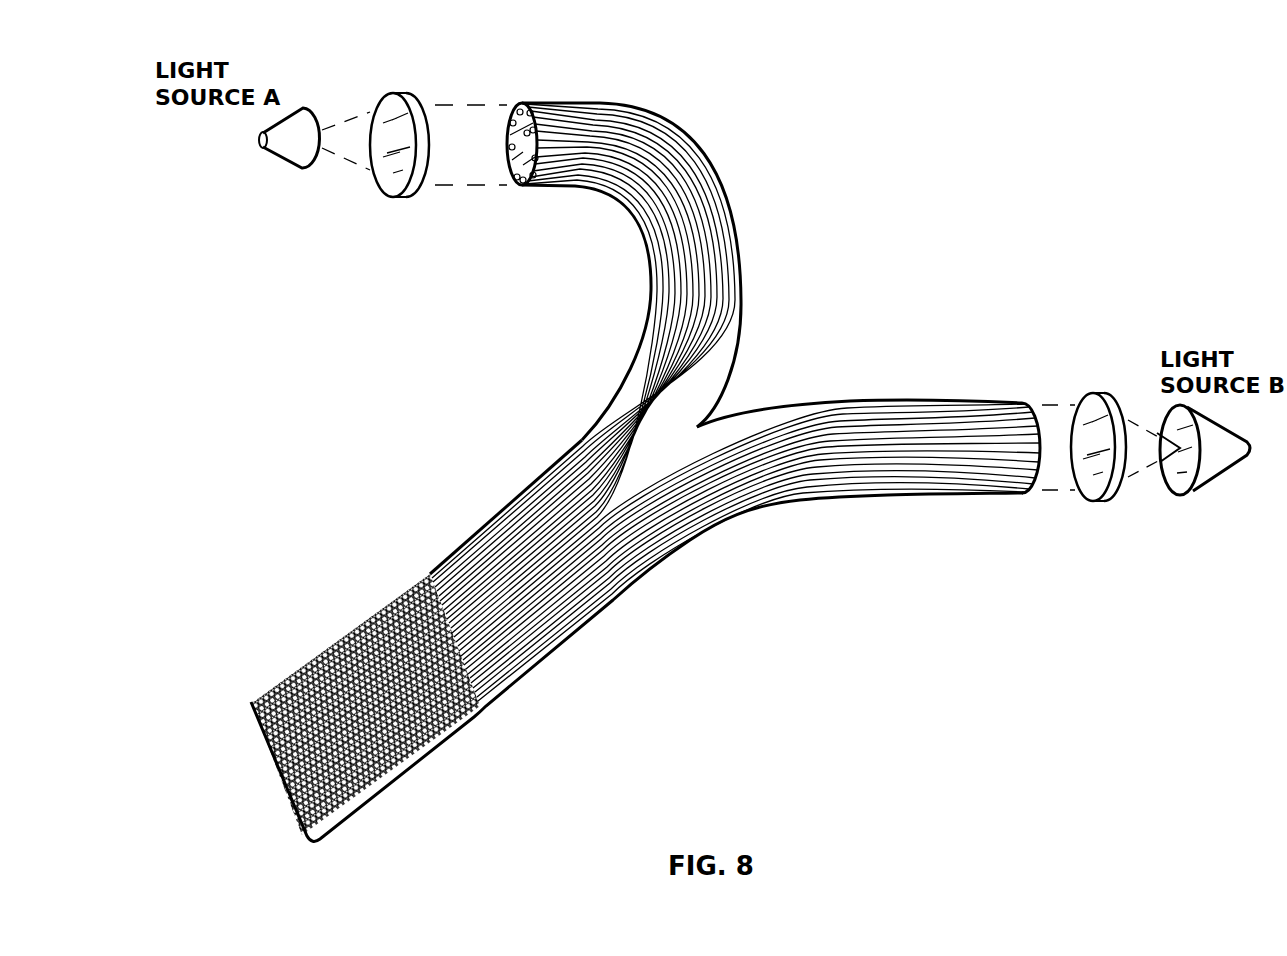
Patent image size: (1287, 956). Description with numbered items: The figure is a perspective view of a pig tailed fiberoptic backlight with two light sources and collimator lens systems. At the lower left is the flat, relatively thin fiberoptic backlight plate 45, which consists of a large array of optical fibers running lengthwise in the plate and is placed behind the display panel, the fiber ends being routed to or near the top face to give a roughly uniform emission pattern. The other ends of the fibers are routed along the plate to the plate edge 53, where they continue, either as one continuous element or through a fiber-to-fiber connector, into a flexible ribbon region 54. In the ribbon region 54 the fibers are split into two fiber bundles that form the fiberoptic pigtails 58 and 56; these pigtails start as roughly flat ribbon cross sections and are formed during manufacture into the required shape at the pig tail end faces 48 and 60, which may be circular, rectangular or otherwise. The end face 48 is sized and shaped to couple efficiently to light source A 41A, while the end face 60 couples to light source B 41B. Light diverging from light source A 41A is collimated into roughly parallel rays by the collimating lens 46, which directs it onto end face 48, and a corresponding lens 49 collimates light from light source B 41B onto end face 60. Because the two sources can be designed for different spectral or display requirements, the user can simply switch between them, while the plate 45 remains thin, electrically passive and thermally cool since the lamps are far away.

The light source A 41A is at (290, 147).
The light source B 41B is at (1222, 458).
The collimating lens 46 is at (392, 93).
The lens 49 is at (1109, 400).
The pig tail end face 48 is at (517, 108).
The fiberoptic bundle pigtail 58 is at (640, 338).
The flexible ribbon region 54 is at (590, 467).
The plate edge 53 is at (448, 603).
The fiberoptic backlight plate 45 is at (318, 648).
The fiberoptic bundle pigtail 56 is at (818, 488).
The pig tail end face 60 is at (1040, 463).